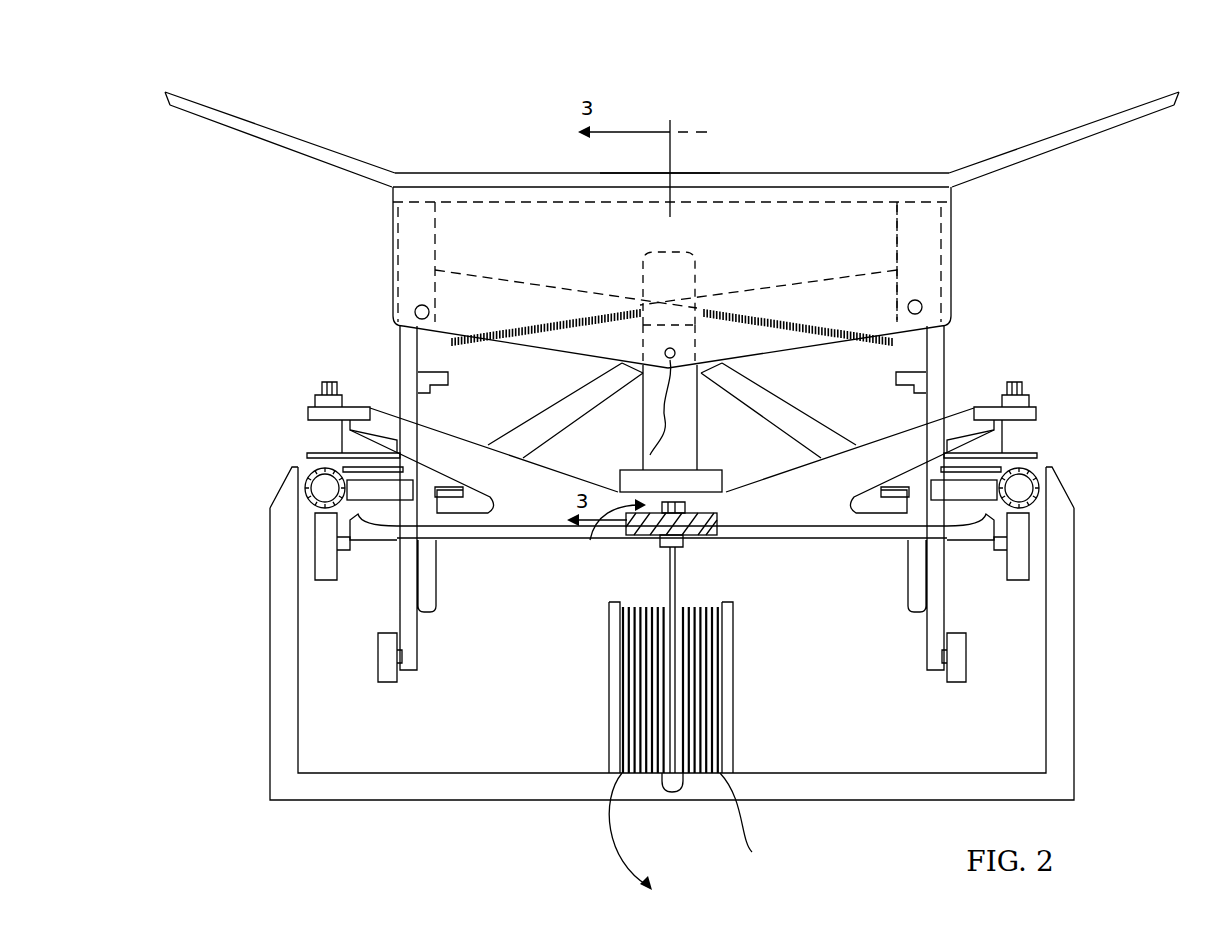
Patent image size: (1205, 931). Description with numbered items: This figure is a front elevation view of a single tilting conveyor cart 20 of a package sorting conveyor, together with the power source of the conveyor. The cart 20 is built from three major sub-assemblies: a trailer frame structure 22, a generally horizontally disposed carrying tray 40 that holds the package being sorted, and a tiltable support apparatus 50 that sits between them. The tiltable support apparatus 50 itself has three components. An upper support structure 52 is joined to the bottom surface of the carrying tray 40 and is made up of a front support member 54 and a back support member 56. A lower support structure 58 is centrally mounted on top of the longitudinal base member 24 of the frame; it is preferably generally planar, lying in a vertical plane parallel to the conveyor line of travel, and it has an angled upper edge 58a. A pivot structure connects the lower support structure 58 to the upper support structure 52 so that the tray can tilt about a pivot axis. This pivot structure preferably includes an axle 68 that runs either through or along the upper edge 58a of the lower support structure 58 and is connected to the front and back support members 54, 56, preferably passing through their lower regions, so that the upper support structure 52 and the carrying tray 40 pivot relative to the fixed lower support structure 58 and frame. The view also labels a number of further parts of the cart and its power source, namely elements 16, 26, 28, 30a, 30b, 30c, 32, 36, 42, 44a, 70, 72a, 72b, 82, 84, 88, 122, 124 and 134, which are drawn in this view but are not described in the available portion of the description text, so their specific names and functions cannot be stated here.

The frame side walls 16 is at (280, 680).
The cart 20 is at (437, 124).
The trailer frame structure 22 is at (738, 545).
The longitudinal base member 24 is at (633, 536).
The support arm 26 is at (513, 507).
The pivot assembly 28 is at (278, 433).
The mounting bracket bolt 30a is at (320, 435).
The bracket block 30b is at (385, 496).
The bearing 30c is at (327, 582).
The mounting plate 32 is at (602, 524).
The drive shaft 36 is at (676, 578).
The carrying tray 40 is at (784, 170).
The deflector wings 42 is at (242, 119).
The hopper top edge 44a is at (722, 172).
The tiltable support apparatus 50 is at (707, 418).
The upper support structure 52 is at (545, 194).
The front support member 54 is at (886, 295).
The back support member 56 is at (845, 220).
The lower support structure 58 is at (672, 387).
The angled upper edge 58a is at (740, 330).
The axle 68 is at (647, 447).
The drive coil assembly 70 is at (671, 746).
The left coil 72a is at (632, 730).
The right coil 72b is at (713, 728).
The support strip 82 is at (415, 594).
The pivot pin 84 is at (414, 308).
The stop block 88 is at (383, 665).
The brace bar 122 is at (573, 407).
The clip 124 is at (438, 360).
The spring 134 is at (450, 339).